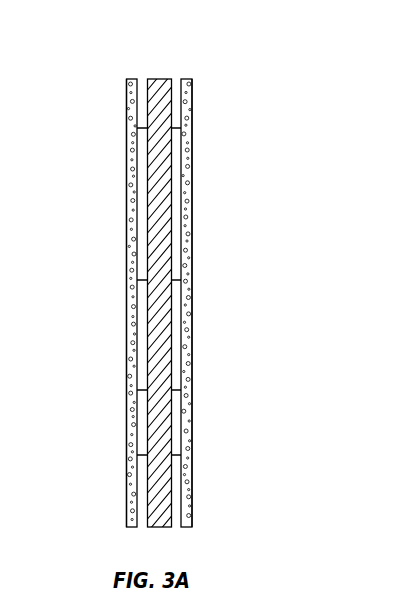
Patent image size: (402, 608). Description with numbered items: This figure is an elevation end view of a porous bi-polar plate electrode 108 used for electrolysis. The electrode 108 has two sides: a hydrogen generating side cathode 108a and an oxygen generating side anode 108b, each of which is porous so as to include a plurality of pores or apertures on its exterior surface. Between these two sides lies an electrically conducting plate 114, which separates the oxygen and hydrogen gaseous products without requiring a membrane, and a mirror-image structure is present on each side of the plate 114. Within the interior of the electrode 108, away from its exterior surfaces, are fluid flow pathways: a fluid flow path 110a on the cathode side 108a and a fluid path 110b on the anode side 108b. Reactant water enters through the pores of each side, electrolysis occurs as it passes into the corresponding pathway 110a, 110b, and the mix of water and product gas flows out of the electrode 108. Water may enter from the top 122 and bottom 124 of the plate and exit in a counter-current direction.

The electrode 108 is at (295, 90).
The hydrogen generating side cathode 108a is at (190, 127).
The oxygen generating side anode 108b is at (133, 144).
The fluid flow path 110a is at (178, 79).
The fluid path 110b is at (142, 79).
The electrically conducting plate 114 is at (160, 211).
The top 122 is at (95, 187).
The bottom 124 is at (207, 488).